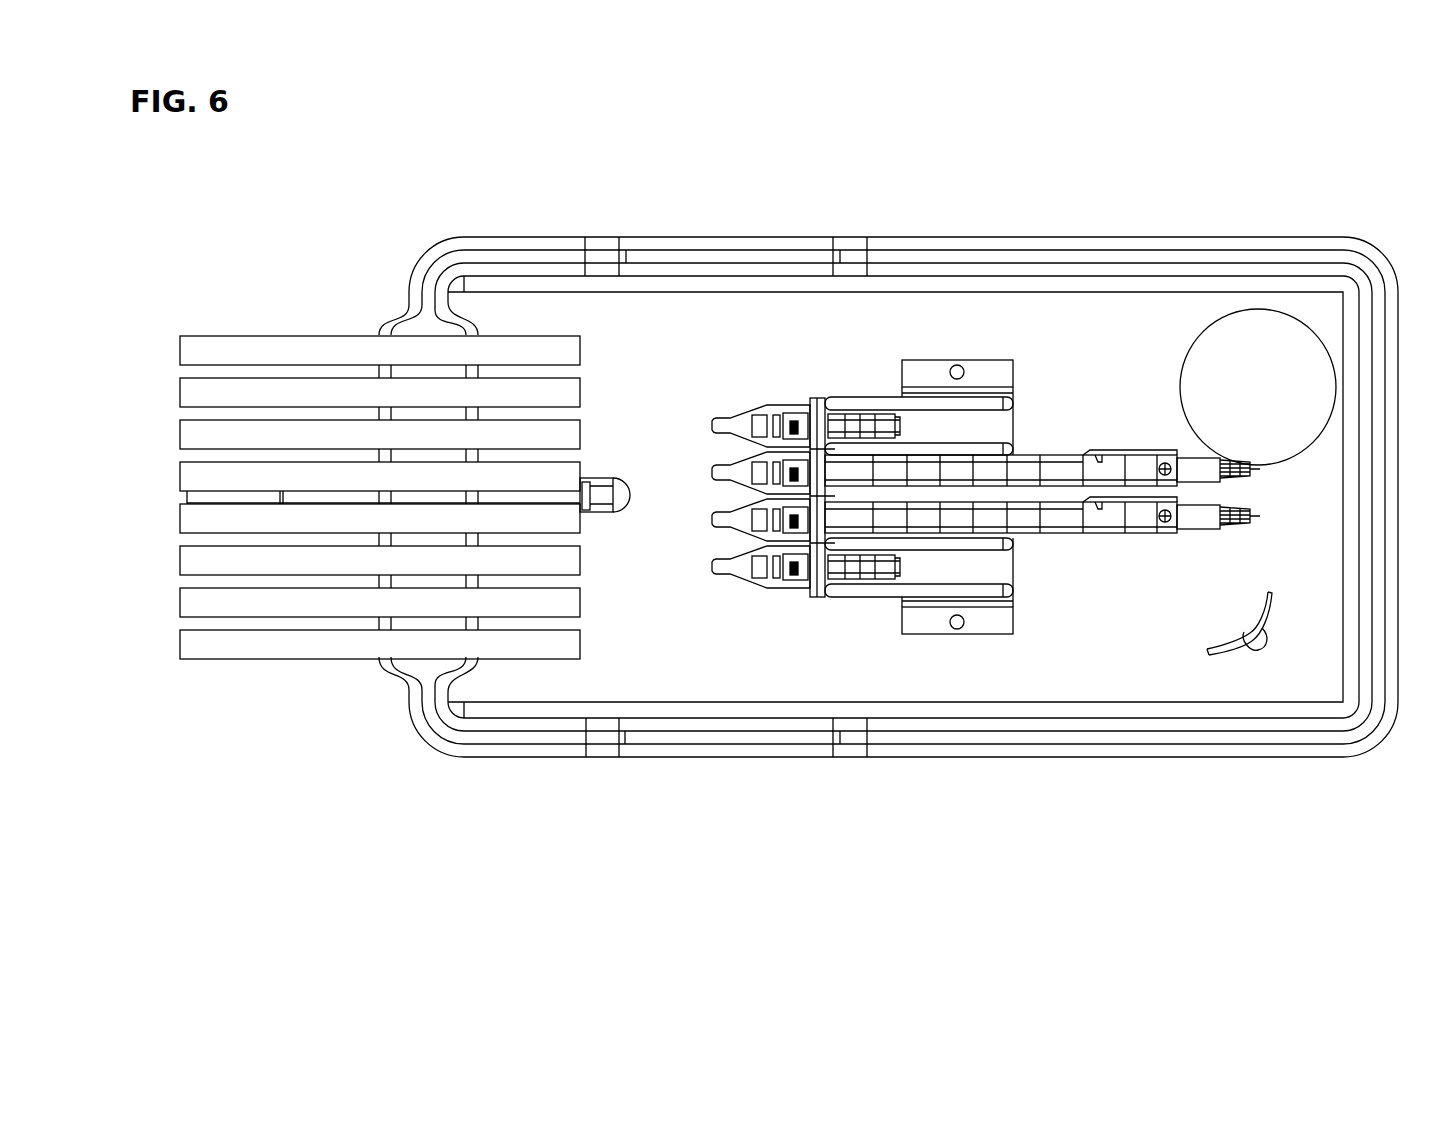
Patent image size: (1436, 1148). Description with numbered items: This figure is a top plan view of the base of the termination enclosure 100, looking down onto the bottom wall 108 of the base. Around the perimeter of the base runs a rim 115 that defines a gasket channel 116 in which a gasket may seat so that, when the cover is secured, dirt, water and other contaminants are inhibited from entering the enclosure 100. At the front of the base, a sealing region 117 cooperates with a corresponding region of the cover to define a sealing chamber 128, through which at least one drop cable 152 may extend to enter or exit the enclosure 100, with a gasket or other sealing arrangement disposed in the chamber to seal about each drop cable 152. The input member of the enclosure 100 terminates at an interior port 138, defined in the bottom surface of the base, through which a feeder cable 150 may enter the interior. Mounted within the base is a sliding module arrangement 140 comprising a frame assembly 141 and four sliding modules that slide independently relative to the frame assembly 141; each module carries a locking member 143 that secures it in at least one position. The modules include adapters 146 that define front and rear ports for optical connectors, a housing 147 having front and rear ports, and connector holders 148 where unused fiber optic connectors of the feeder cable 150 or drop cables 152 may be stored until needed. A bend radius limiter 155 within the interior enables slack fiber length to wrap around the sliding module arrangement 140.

The enclosure 100 is at (1161, 226).
The bottom wall 108 is at (690, 660).
The rim 115 is at (709, 757).
The gasket channel 116 is at (553, 737).
The sealing region 117 is at (388, 330).
The sealing chamber 128 is at (423, 668).
The interior port 138 is at (600, 505).
The sliding module arrangement 140 is at (1031, 383).
The frame assembly 141 is at (900, 602).
The locking member 143 is at (760, 410).
The adapter 146 is at (1200, 470).
The housing 147 is at (1047, 455).
The connector holder 148 is at (836, 418).
The feeder cable 150 is at (594, 490).
The drop cable 152 is at (247, 637).
The bend radius limiter 155 is at (1253, 637).